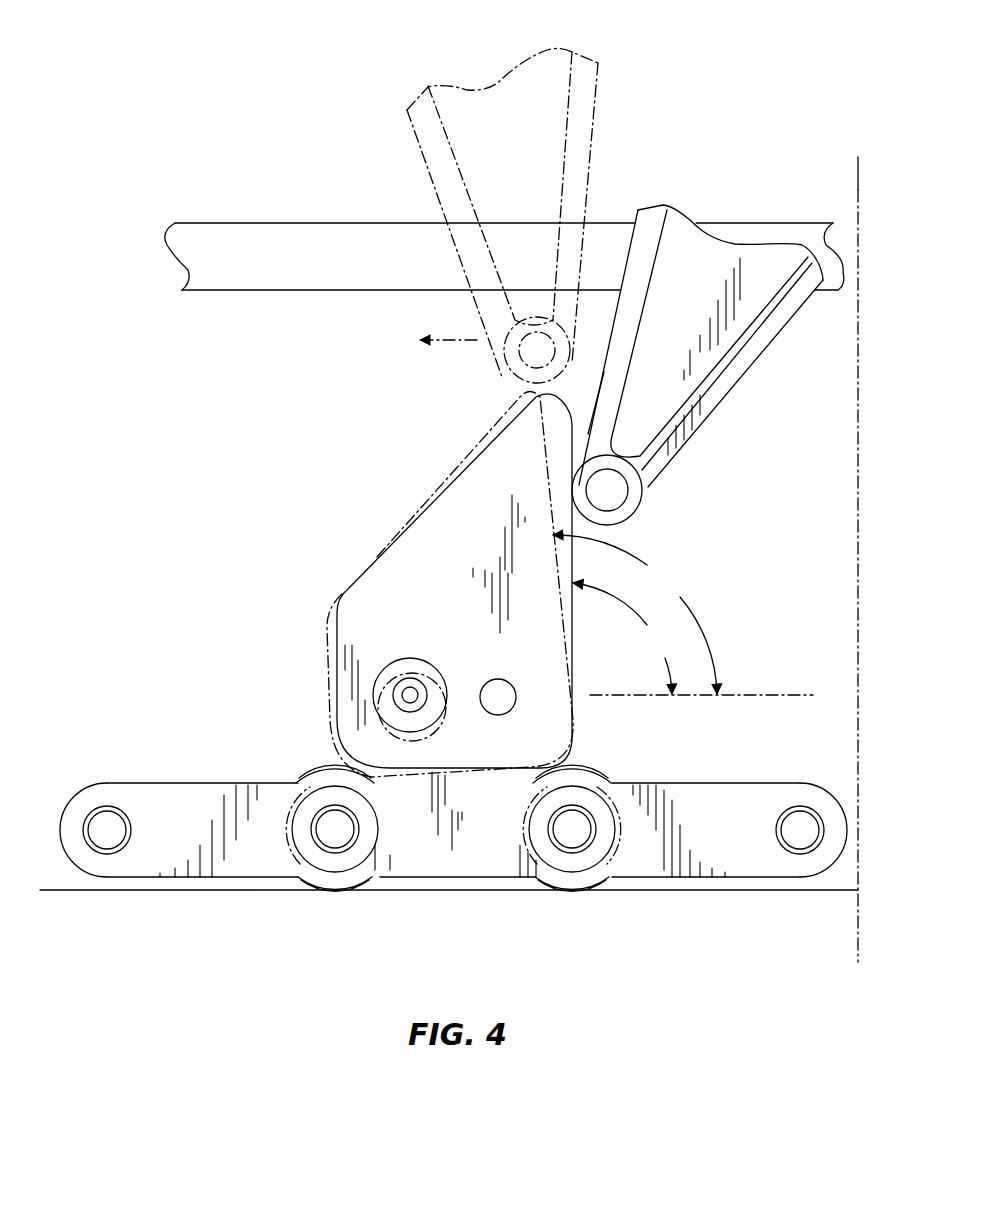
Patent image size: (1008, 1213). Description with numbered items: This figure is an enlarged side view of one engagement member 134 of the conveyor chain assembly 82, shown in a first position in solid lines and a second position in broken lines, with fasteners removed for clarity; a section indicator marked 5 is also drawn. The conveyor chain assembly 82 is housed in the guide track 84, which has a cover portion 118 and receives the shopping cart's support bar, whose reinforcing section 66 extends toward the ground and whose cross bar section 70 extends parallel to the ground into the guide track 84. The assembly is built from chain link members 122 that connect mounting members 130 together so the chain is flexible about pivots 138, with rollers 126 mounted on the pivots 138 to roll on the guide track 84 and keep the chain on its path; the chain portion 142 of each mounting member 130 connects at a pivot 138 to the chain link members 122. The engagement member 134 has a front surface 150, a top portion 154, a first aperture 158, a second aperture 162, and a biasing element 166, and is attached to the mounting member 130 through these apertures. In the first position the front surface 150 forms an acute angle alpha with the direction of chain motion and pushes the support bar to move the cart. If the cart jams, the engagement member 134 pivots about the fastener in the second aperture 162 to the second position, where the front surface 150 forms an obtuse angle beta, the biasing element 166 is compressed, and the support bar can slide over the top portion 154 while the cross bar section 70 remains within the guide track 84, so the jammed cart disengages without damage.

The section line 5- 5 is at (858, 172).
The reinforcing section 66 is at (685, 327).
The cross bar section 70 is at (618, 522).
The conveyor chain assembly 82 is at (108, 630).
The guide track 84 is at (449, 549).
The cover portion 118 is at (230, 250).
The chain link members 122 is at (197, 827).
The rollers 126 is at (340, 897).
The mounting members 130 is at (420, 860).
The engagement member 134 is at (373, 612).
The pivots 138 is at (93, 853).
The chain portion 142 is at (467, 853).
The front surface 150 is at (572, 613).
The top portion 154 is at (542, 392).
The first aperture 158 is at (405, 692).
The second aperture 162 is at (510, 700).
The biasing element 166 is at (382, 692).